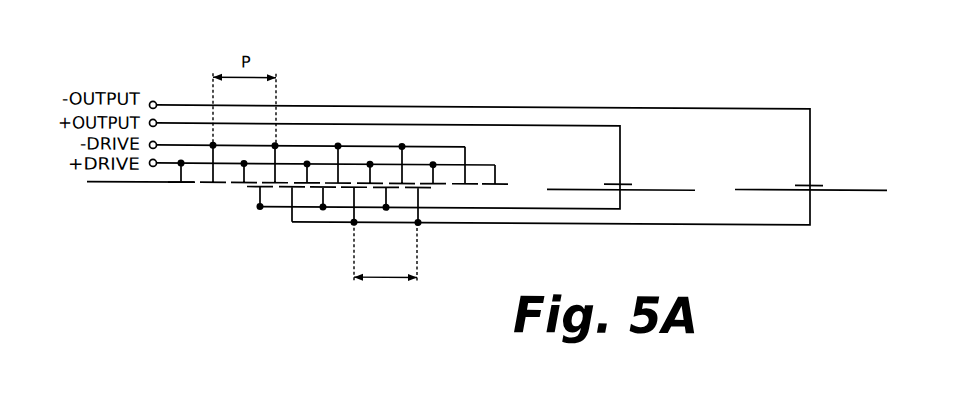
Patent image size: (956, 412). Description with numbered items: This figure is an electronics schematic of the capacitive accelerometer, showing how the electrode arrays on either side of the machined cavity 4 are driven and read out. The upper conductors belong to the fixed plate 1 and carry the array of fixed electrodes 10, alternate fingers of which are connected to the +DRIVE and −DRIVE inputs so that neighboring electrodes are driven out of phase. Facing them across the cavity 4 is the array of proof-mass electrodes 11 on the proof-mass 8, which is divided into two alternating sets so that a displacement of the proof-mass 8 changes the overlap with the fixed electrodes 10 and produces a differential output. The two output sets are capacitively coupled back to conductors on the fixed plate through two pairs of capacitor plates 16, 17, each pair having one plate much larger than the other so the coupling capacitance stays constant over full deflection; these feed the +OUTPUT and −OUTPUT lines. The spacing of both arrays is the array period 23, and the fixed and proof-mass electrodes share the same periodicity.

The fixed plate 1 is at (898, 100).
The proof-mass 8 is at (898, 187).
The fixed electrodes 10 is at (513, 99).
The proof-mass electrodes 11 is at (437, 228).
The machined cavity 4 is at (134, 186).
The capacitor plates 16 is at (602, 181).
The capacitor plates 17 is at (793, 182).
The array period 23 is at (385, 264).